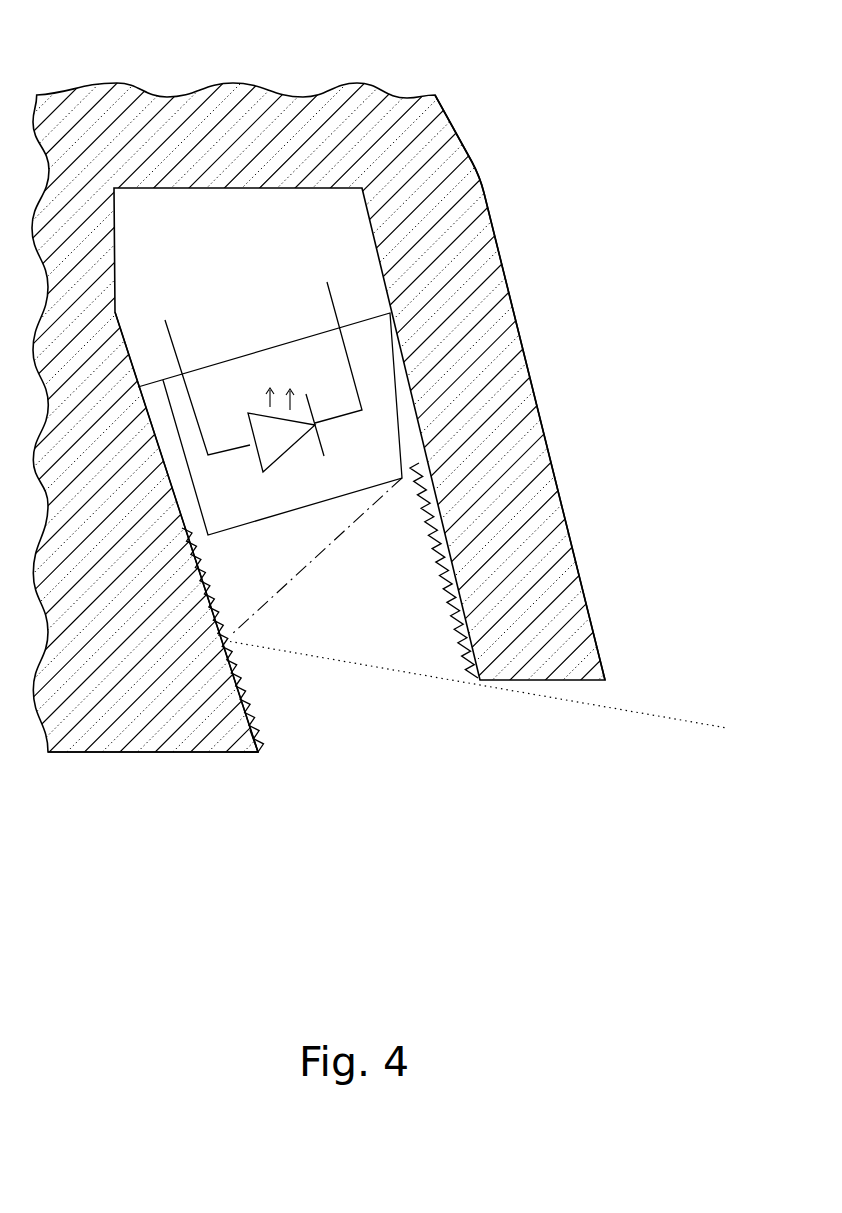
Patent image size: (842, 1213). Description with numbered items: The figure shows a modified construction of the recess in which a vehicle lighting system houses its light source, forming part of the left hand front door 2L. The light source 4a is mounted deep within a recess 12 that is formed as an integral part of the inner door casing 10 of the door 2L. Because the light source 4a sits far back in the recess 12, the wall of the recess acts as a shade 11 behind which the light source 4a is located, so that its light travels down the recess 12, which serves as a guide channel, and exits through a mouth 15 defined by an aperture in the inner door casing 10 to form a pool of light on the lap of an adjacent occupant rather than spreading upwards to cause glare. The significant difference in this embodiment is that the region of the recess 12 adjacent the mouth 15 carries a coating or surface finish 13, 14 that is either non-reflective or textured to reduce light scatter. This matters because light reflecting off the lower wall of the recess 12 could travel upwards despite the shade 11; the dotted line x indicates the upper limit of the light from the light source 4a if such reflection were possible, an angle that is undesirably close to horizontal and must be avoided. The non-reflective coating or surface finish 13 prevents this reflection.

The recess 12 is at (237, 188).
The light source 4a is at (376, 381).
The shade 11 is at (577, 540).
The inner door casing 10 is at (232, 690).
The left hand front door 2L is at (113, 753).
The non-reflective coating or surface finish 13 is at (247, 700).
The coating or surface finish 14 is at (478, 678).
The mouth 15 is at (260, 752).
The upper limit of the light x is at (420, 675).